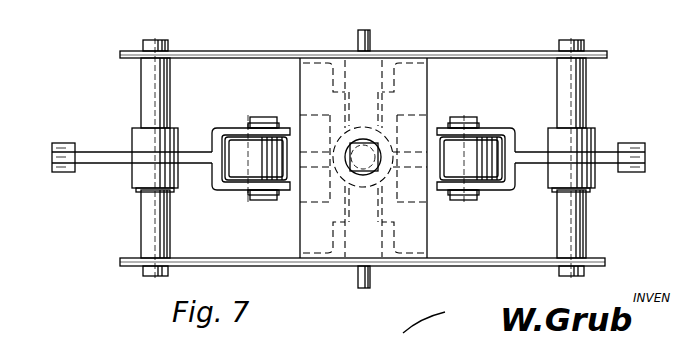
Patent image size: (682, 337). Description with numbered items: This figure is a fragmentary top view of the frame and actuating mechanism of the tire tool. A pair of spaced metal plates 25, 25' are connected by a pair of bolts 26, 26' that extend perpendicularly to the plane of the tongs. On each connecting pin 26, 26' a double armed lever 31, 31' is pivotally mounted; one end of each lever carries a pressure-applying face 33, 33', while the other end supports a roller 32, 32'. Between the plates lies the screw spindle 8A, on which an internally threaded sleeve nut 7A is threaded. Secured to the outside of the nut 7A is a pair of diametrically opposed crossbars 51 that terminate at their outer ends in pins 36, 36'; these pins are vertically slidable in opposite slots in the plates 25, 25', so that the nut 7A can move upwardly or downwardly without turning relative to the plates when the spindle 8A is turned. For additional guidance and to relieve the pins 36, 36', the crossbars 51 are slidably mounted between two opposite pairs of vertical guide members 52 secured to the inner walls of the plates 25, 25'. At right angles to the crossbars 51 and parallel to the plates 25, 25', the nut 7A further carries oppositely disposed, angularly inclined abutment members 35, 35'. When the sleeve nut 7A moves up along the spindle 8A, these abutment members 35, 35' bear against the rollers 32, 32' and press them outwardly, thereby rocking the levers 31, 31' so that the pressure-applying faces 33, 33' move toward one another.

The sleeve nut 7A is at (345, 175).
The screw spindle 8A is at (366, 152).
The metal plate 25 is at (362, 276).
The metal plate 25' is at (363, 43).
The bolt 26 is at (140, 158).
The bolt 26' is at (583, 158).
The double armed lever 31 is at (132, 170).
The double armed lever 31' is at (580, 180).
The roller 32 is at (246, 151).
The roller 32' is at (479, 166).
The pressure-applying face 33 is at (59, 171).
The pressure-applying face 33' is at (641, 171).
The abutment member 35 is at (251, 135).
The abutment member 35' is at (475, 178).
The pin 36 is at (381, 31).
The pin 36' is at (348, 289).
The crossbar 51 is at (368, 78).
The vertical guide member 52 is at (338, 56).